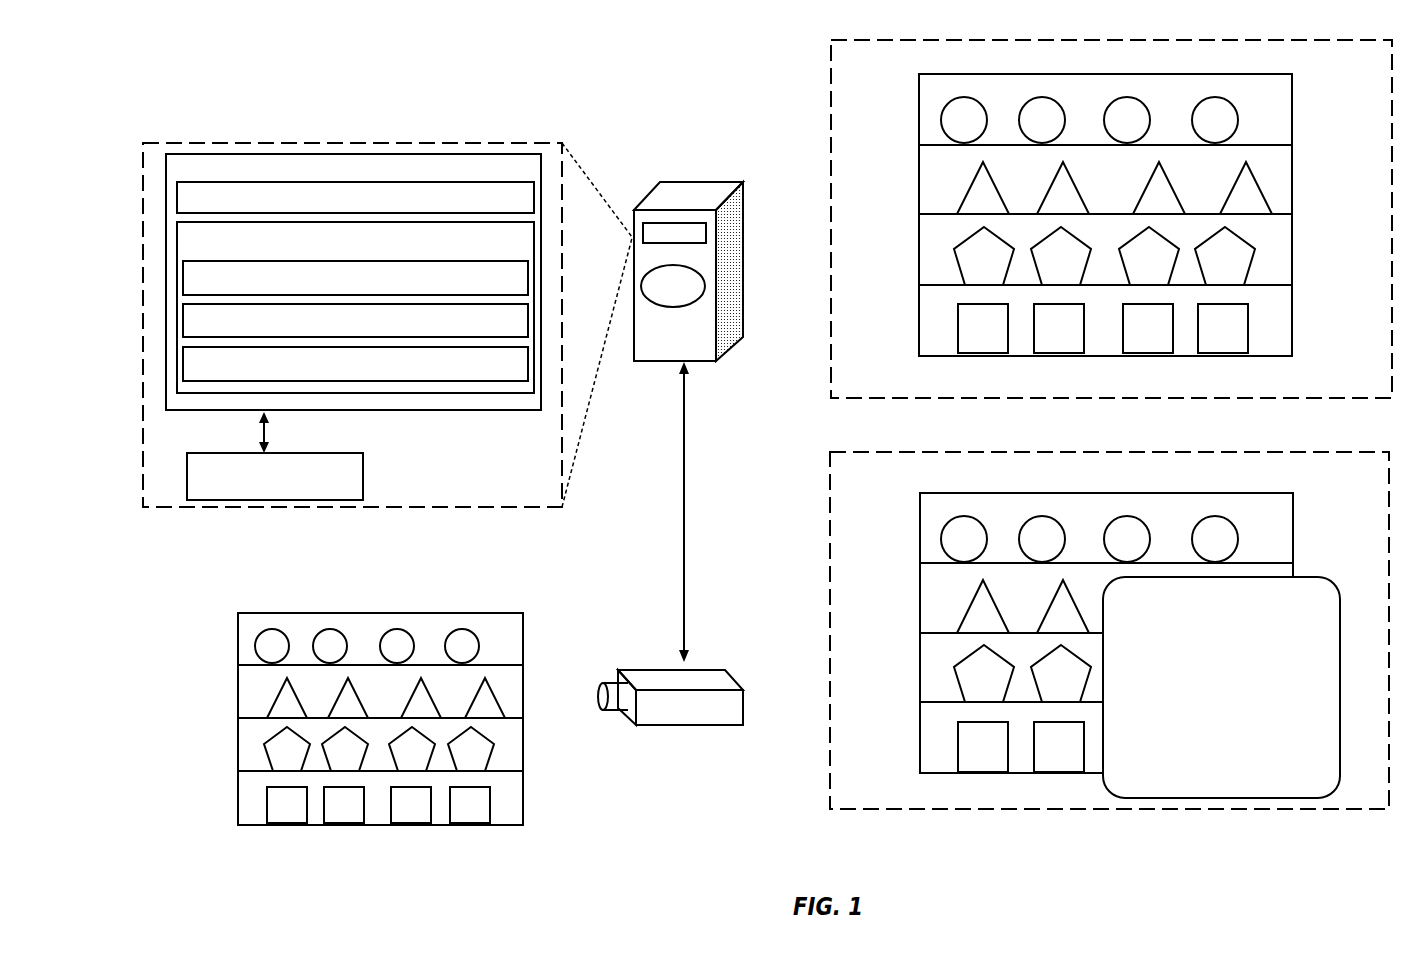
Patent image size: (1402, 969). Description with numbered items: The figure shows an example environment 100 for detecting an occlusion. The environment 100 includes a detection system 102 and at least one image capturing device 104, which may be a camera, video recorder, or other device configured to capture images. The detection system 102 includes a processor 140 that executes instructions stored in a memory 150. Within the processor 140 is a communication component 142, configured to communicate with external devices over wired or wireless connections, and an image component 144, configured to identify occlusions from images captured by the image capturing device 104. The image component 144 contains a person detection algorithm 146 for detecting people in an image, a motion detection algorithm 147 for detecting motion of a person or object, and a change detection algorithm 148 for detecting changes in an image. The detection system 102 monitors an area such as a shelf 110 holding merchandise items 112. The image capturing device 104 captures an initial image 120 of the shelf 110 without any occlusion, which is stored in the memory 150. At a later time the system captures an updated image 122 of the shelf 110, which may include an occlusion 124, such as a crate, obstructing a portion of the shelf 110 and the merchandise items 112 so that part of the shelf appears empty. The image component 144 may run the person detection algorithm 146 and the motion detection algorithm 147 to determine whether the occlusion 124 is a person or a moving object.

The environment 100 is at (230, 72).
The detection system 102 is at (695, 182).
The image capturing device 104 is at (658, 670).
The shelf 110 is at (341, 687).
The merchandise items 112 is at (216, 725).
The initial image 120 is at (831, 112).
The updated image 122 is at (1083, 630).
The occlusion 124 is at (1305, 578).
The processor 140 is at (416, 181).
The communication component 142 is at (506, 208).
The image component 144 is at (460, 250).
The person detection algorithm 146 is at (503, 288).
The motion detection algorithm 147 is at (505, 331).
The change detection algorithm 148 is at (507, 375).
The memory 150 is at (333, 490).